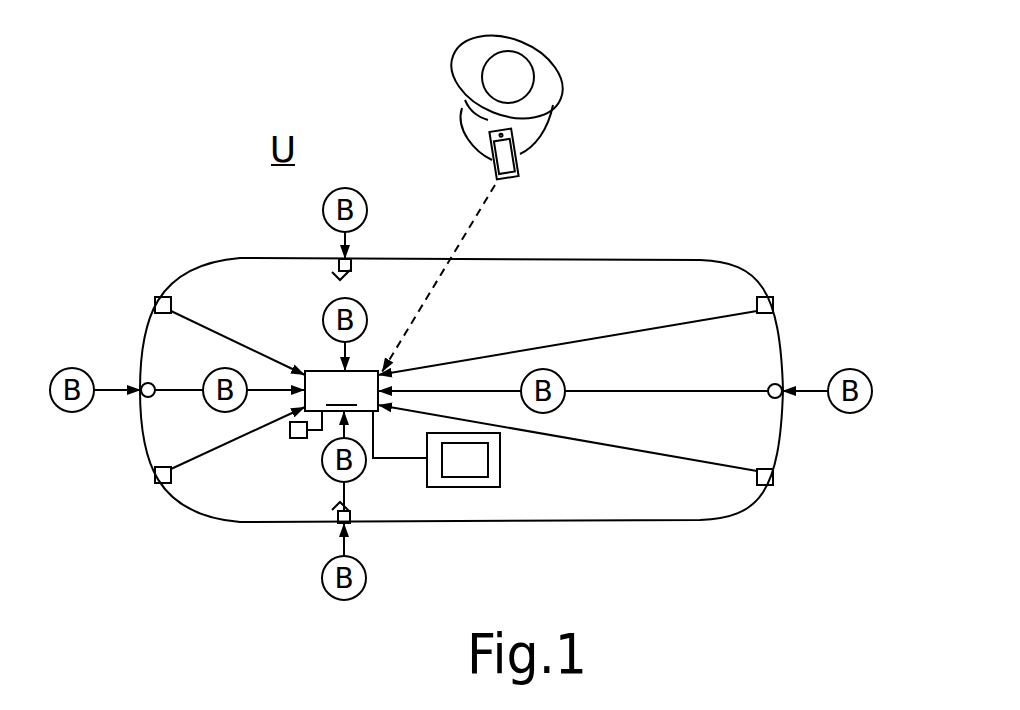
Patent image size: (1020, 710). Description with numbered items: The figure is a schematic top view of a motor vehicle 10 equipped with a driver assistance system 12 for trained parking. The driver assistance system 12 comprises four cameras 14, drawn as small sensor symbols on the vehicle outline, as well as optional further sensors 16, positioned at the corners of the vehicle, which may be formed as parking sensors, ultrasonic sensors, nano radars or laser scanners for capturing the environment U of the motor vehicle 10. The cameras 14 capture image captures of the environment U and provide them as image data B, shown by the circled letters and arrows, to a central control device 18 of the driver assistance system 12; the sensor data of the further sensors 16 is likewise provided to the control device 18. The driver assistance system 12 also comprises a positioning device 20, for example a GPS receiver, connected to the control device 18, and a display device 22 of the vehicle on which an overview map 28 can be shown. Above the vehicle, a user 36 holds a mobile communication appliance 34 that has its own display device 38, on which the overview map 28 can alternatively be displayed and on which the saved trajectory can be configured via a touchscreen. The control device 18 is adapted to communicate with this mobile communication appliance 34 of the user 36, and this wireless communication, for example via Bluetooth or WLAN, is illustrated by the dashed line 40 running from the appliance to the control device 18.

The motor vehicle 10 is at (222, 243).
The driver assistance system 12 is at (300, 352).
The camera 14 is at (352, 262).
The sensors 16 is at (163, 295).
The control device 18 is at (341, 391).
The positioning device 20 is at (297, 440).
The display device 22 is at (500, 452).
The overview map 28 is at (467, 478).
The mobile communication appliance 34 is at (490, 163).
The user 36 is at (550, 92).
The display device 38 is at (490, 145).
The dashed line 40 is at (470, 215).